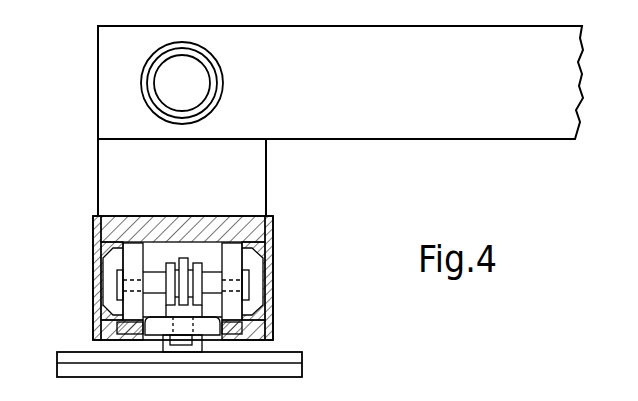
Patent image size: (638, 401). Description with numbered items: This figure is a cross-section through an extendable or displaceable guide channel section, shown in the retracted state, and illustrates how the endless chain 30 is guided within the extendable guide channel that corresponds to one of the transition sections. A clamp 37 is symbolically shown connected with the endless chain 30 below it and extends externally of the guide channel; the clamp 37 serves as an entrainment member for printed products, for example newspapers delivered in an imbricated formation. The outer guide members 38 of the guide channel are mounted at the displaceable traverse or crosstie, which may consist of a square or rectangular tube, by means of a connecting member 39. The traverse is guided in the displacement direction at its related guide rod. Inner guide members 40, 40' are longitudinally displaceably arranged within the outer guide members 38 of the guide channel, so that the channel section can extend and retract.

The connecting member or component 39 is at (254, 178).
The outer guide members or components 38 is at (270, 222).
The endless chain 30 is at (157, 262).
The inner guide member or component 40 is at (94, 281).
The inner guide member or component 40' is at (277, 281).
The clamp 37 is at (295, 370).